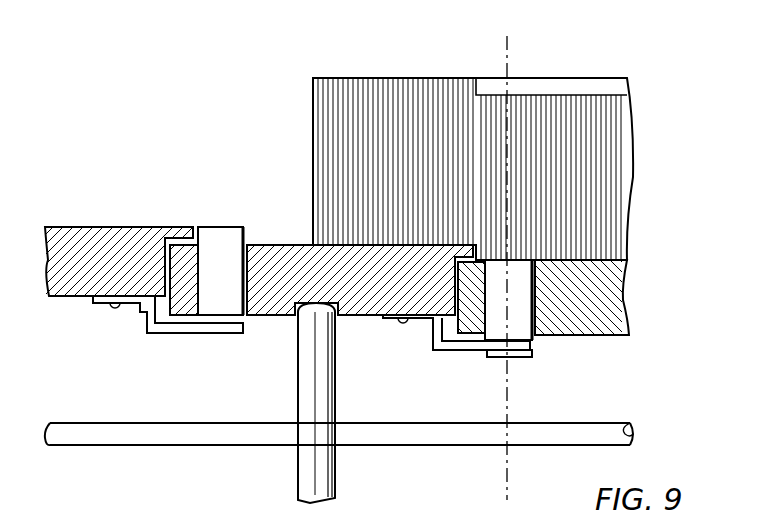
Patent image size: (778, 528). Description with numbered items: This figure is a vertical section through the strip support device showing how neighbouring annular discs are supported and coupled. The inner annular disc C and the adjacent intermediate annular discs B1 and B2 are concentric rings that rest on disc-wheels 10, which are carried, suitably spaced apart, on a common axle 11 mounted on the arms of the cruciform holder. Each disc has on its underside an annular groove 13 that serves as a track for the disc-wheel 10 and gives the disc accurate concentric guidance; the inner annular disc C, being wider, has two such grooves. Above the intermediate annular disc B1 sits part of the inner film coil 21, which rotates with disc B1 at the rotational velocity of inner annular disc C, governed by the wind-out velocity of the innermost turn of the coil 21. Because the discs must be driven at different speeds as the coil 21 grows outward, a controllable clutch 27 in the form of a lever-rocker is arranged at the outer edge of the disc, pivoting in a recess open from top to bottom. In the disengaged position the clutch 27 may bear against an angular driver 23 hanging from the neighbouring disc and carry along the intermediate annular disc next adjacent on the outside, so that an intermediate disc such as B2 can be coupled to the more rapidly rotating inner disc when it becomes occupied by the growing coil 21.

The disc-wheel 10 is at (305, 462).
The axle 11 is at (636, 432).
The annular groove 13 is at (297, 320).
The film coil 21 is at (315, 112).
The angular driver 23 is at (140, 323).
The controllable clutch 27 is at (218, 226).
The intermediate annular disc B1 is at (287, 244).
The intermediate annular disc B2 is at (88, 226).
The inner annular disc C is at (623, 308).